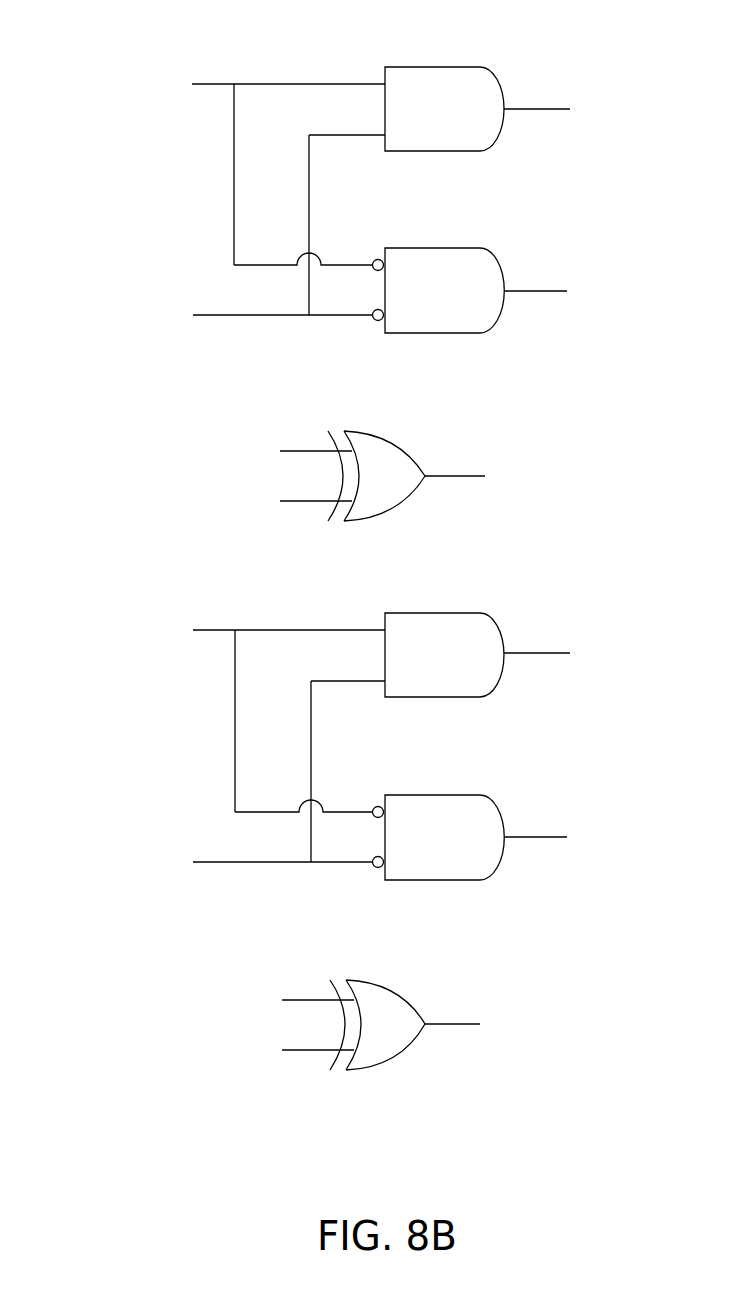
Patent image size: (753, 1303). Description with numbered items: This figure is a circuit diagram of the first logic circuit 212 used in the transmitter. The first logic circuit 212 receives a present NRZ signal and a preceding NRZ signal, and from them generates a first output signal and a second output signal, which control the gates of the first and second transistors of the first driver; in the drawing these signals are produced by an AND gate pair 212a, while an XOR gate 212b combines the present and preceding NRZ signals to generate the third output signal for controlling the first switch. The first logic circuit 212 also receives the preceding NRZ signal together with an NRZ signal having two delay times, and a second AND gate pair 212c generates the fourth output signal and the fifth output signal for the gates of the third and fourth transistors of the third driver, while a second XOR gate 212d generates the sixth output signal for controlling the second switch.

The first logic circuit 212 is at (70, 37).
The AND gate pair for bit n 212a is at (372, 200).
The XOR gate for bit n 212b is at (366, 476).
The AND gate pair for bit n-1 212c is at (386, 746).
The XOR gate for bit n-1 212d is at (373, 1025).